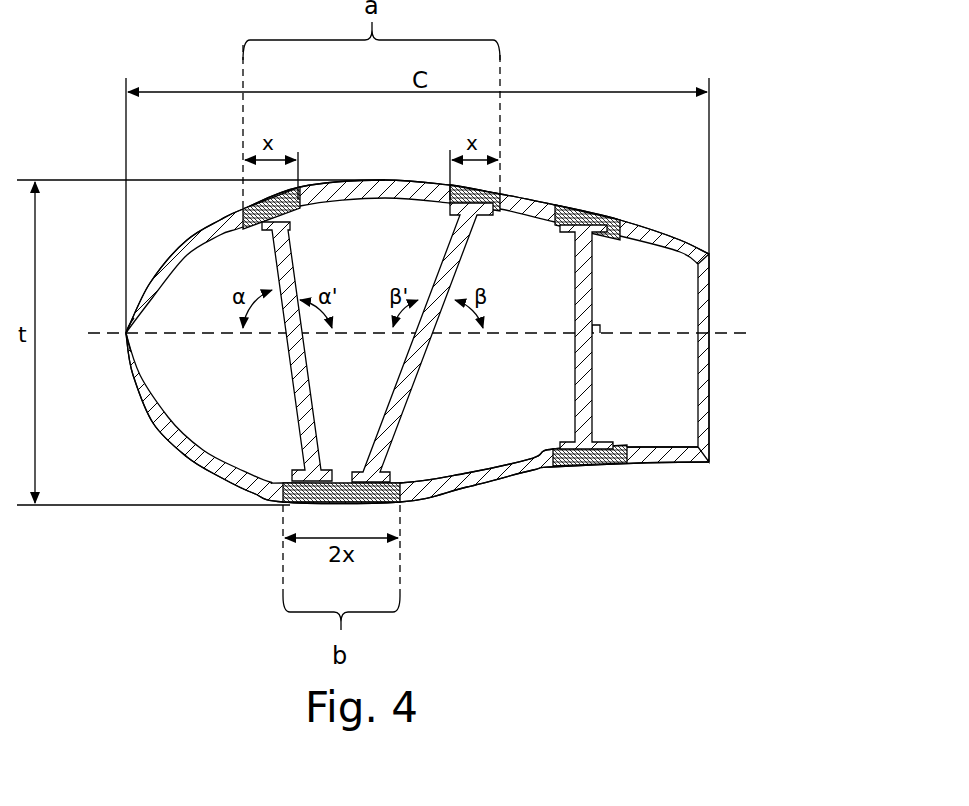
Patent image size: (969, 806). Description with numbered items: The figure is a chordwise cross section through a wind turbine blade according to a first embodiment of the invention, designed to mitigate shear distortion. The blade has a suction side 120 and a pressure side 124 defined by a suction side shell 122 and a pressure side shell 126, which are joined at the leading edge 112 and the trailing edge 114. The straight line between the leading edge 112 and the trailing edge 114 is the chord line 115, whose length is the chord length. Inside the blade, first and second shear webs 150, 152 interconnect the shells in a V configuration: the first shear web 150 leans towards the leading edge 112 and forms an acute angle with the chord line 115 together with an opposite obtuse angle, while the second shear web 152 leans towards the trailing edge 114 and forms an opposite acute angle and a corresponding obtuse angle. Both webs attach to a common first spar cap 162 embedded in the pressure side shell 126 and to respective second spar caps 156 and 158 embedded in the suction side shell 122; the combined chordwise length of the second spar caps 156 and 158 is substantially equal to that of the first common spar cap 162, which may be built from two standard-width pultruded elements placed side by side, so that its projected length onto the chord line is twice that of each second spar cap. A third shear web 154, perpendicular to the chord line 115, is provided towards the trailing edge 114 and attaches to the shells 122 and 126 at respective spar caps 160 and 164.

The leading edge 112 is at (126, 336).
The trailing edge 114 is at (712, 312).
The chord line 115 is at (197, 338).
The suction side 120 is at (383, 172).
The suction side shell 122 is at (556, 196).
The pressure side 124 is at (512, 490).
The pressure side shell 126 is at (450, 492).
The first shear web 150 is at (305, 340).
The second shear web 152 is at (433, 343).
The third shear web 154 is at (598, 343).
The second spar cap 156 is at (243, 211).
The second spar cap 158 is at (503, 193).
The spar cap 160 is at (612, 216).
The first common spar cap 162 is at (270, 498).
The spar cap 164 is at (600, 469).